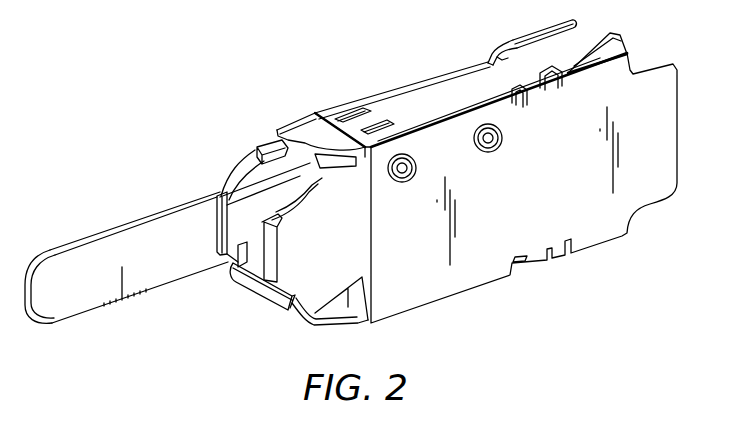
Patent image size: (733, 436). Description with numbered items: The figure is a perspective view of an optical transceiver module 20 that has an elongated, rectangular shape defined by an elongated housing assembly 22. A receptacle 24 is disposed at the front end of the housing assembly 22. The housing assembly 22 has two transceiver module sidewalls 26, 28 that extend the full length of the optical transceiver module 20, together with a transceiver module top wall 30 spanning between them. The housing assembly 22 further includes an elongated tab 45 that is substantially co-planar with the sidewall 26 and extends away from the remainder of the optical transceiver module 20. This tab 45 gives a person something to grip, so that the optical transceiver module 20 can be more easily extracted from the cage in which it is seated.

The optical transceiver module 20 is at (250, 56).
The housing assembly 22 is at (373, 88).
The receptacle 24 is at (268, 296).
The transceiver module sidewall 26 is at (477, 62).
The transceiver module sidewall 28 is at (601, 236).
The transceiver module top wall 30 is at (577, 47).
The elongated tab 45 is at (110, 227).